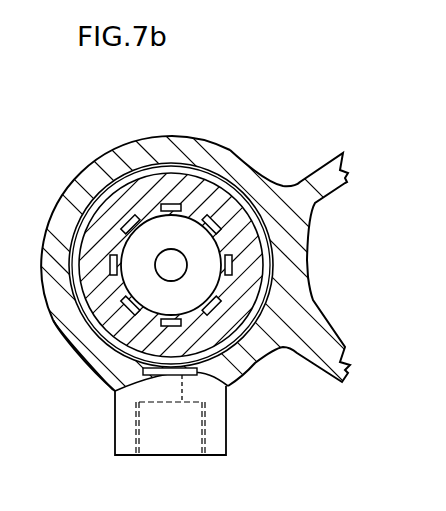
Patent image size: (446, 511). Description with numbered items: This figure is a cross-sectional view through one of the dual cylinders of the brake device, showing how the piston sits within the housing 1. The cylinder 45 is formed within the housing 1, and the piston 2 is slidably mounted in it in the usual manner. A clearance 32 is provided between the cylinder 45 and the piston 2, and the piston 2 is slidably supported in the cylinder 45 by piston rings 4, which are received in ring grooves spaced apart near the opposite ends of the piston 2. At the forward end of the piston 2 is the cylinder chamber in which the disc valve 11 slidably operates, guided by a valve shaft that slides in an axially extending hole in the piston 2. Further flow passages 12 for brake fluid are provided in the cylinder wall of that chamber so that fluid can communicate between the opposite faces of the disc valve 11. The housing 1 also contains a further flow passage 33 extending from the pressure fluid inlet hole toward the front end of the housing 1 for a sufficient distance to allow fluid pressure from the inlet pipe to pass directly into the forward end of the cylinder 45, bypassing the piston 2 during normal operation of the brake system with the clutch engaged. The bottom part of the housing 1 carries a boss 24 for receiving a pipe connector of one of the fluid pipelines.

The housing 1 is at (90, 158).
The piston 2 is at (180, 193).
The piston rings 4 is at (115, 391).
The disc valve 11 is at (135, 248).
The flow passages 12 is at (211, 216).
The boss 24 is at (226, 431).
The clearance 32 is at (138, 167).
The flow passage 33 is at (228, 386).
The cylinder 45 is at (80, 176).